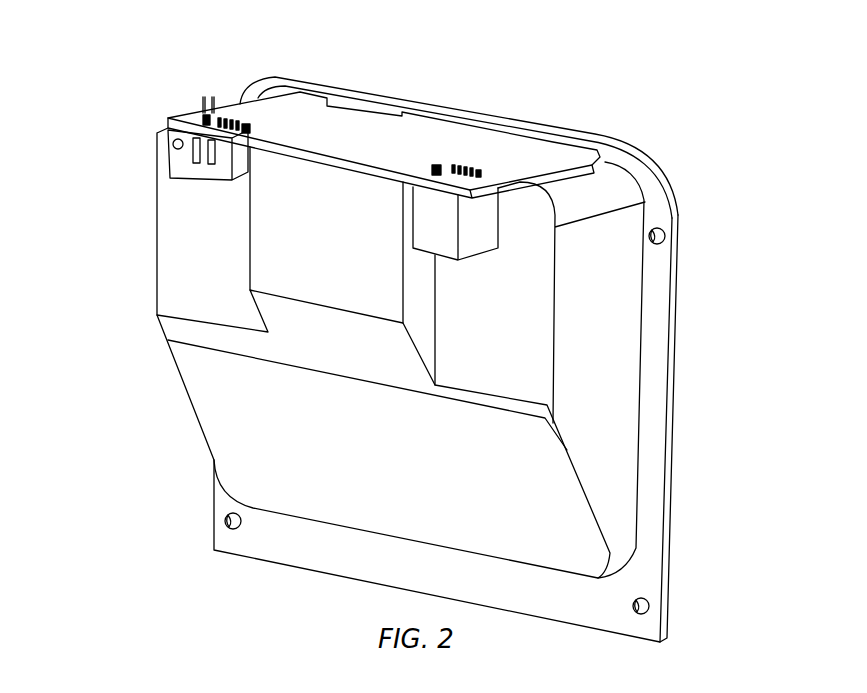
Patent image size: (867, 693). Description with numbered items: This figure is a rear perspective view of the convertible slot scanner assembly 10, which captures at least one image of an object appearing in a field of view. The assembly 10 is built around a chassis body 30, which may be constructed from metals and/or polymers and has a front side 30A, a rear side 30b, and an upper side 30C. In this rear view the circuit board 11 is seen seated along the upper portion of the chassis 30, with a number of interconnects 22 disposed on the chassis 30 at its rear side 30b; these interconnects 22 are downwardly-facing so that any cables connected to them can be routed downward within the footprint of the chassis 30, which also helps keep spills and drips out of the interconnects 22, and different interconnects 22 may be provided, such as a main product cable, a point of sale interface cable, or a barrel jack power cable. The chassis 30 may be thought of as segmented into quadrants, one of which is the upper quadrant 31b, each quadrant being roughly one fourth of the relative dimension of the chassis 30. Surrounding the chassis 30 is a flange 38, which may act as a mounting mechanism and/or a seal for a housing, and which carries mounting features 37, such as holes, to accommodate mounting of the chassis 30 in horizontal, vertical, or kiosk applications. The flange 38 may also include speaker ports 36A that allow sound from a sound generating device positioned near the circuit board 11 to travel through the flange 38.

The convertible slot scanner assembly 10 is at (97, 449).
The circuit board 11 is at (307, 110).
The interconnect 22 is at (175, 143).
The chassis body 30 is at (410, 335).
The front side 30A is at (614, 116).
The rear side 30b is at (133, 270).
The upper side 30C is at (438, 82).
The upper quadrant 31b is at (690, 157).
The speaker port 36A is at (663, 350).
The mounting feature 37 is at (650, 607).
The flange 38 is at (592, 170).